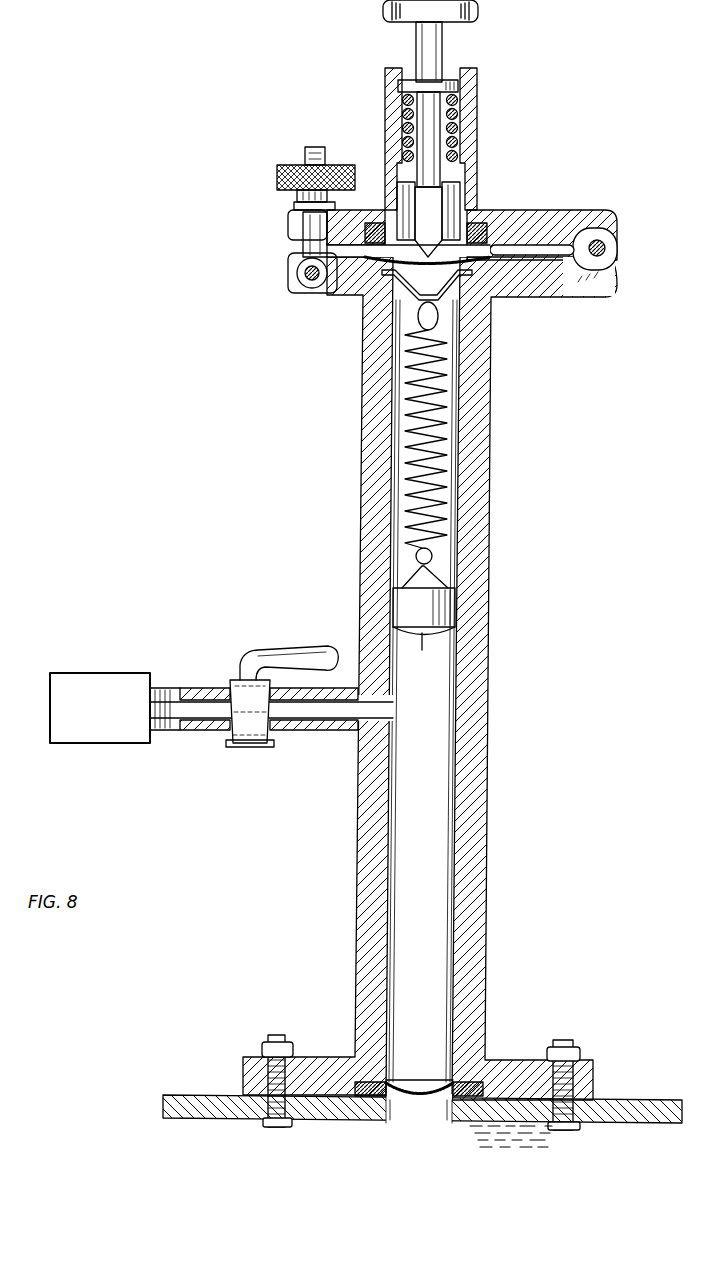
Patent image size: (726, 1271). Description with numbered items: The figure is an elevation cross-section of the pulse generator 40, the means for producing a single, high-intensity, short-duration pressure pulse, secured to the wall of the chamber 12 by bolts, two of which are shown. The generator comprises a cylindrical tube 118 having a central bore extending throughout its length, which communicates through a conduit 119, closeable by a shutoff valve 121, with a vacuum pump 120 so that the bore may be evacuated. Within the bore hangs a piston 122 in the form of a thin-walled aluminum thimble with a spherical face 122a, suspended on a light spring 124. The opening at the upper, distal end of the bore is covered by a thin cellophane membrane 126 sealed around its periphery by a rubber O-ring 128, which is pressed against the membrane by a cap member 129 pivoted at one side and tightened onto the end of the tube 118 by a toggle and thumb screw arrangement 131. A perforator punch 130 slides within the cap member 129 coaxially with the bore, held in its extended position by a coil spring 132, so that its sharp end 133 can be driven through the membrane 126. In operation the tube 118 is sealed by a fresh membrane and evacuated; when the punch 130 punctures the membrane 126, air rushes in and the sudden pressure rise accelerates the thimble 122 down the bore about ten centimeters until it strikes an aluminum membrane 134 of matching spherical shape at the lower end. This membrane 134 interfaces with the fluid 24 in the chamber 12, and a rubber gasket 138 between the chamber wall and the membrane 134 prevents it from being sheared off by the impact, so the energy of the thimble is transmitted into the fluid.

The chamber 12 is at (200, 1074).
The fluid 24 is at (503, 1143).
The pulse generator 40 is at (512, 514).
The cylindrical tube 118 is at (488, 772).
The conduit 119 is at (190, 705).
The vacuum pump 120 is at (80, 673).
The shutoff valve 121 is at (318, 647).
The piston 122 is at (456, 600).
The spherical face 122a is at (422, 650).
The light spring 124 is at (440, 451).
The cellophane membrane 126 is at (408, 272).
The O-ring 128 is at (503, 205).
The cap member 129 is at (563, 218).
The perforator punch 130 is at (427, 110).
The toggle and thumb screw arrangement 131 is at (303, 245).
The coil spring 132 is at (457, 118).
The sharp end 133 is at (470, 226).
The aluminum membrane 134 is at (419, 1092).
The rubber gasket 138 is at (457, 1097).